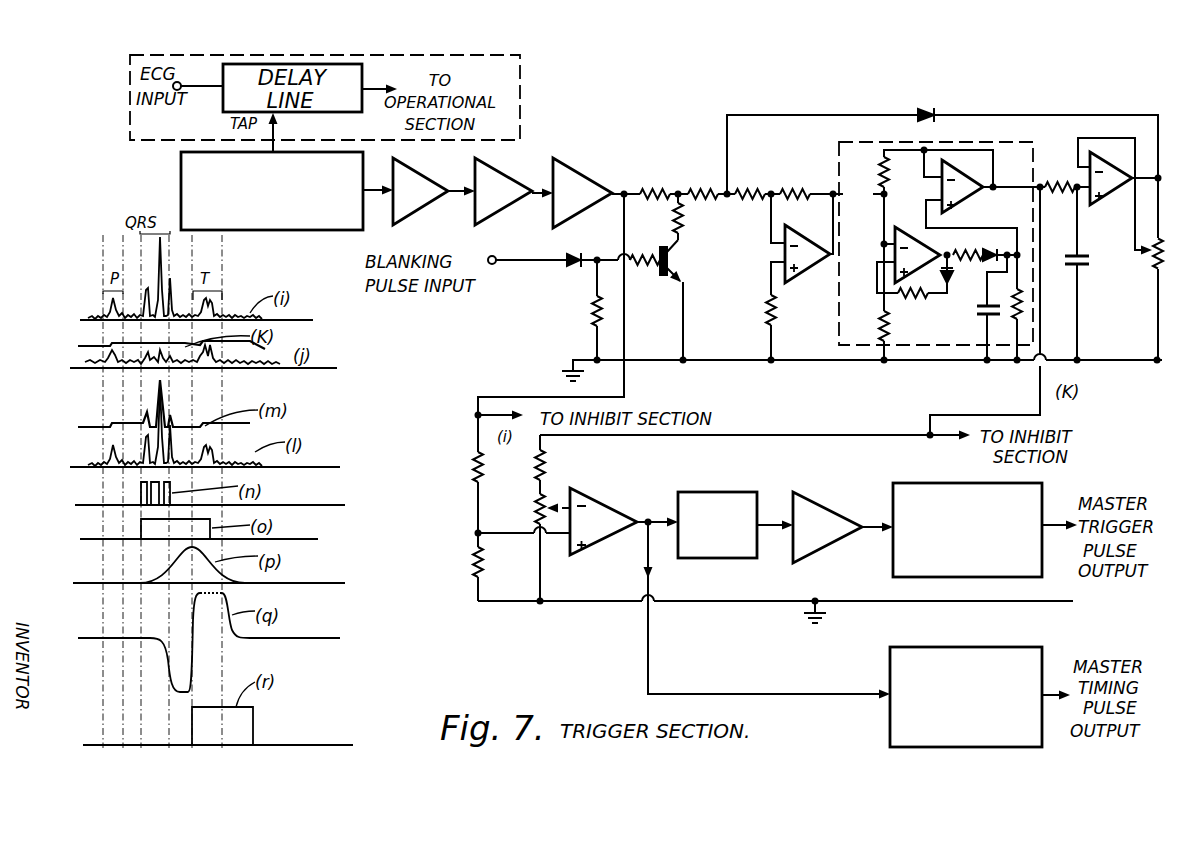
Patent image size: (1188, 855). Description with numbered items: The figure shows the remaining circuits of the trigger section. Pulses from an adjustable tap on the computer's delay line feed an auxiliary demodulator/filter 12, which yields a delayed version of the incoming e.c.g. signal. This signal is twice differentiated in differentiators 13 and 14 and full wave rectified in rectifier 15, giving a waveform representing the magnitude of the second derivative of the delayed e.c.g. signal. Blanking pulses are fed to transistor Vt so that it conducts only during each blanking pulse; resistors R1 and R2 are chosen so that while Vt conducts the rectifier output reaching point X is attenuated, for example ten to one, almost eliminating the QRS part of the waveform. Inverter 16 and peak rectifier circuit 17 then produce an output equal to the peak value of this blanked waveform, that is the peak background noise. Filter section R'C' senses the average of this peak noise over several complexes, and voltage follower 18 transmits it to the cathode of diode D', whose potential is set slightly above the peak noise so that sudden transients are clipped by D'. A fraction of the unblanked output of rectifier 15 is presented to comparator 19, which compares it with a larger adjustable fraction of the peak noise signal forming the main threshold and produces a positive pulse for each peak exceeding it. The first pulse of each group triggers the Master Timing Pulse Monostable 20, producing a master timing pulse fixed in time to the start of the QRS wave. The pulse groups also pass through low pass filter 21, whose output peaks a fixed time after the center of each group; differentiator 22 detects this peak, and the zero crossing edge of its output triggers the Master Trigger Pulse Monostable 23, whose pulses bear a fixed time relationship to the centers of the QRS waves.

The auxiliary demodulator/filter 12 is at (321, 232).
The differentiator 13 is at (432, 184).
The differentiator 14 is at (510, 184).
The rectifier 15 is at (590, 184).
The inverter 16 is at (798, 275).
The peak rectifier circuit 17 is at (955, 337).
The voltage follower 18 is at (1104, 163).
The comparator 19 is at (603, 521).
The Master Timing Pulse Monostable 20 is at (916, 646).
The low pass filter 21 is at (717, 525).
The differentiator 22 is at (840, 513).
The Master Trigger Pulse Monostable 23 is at (937, 482).
The resistor R1 is at (655, 182).
The resistor R2 is at (692, 219).
The transistor Vt is at (685, 300).
The diode D' is at (941, 106).
The resistor of filter section R'C' R' is at (1065, 176).
The capacitor of filter section R' C' is at (1086, 273).